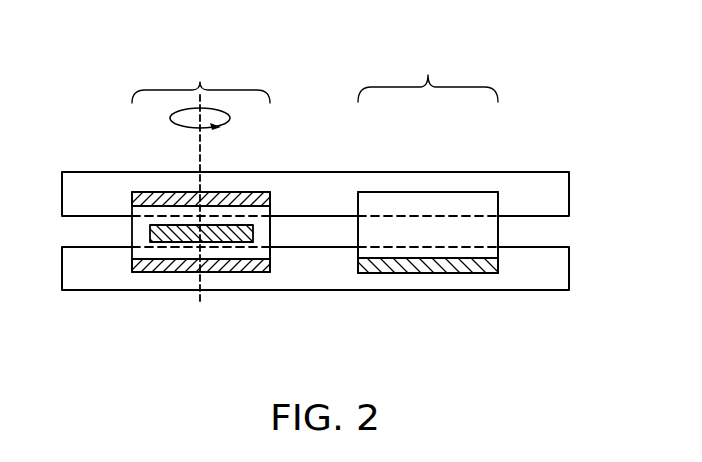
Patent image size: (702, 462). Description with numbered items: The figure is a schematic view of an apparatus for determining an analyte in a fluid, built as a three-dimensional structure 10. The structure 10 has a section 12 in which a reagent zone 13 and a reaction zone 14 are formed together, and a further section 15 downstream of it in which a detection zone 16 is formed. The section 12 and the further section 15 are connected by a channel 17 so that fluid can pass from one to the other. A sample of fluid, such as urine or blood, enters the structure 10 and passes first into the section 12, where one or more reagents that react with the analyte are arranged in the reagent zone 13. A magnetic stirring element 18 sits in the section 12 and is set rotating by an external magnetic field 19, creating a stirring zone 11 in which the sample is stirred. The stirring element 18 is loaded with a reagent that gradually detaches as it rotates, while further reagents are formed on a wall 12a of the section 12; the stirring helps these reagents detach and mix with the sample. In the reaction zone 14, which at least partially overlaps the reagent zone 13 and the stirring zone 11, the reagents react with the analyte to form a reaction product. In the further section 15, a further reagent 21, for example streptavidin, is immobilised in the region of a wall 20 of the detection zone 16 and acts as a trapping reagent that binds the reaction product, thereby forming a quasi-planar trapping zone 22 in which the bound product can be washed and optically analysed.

The three-dimensional structure 10 is at (563, 212).
The stirring zone 11 is at (155, 212).
The section 12 is at (201, 158).
The wall 12a is at (225, 272).
The reagent zone 13 is at (157, 272).
The reaction zone 14 is at (258, 272).
The further section 15 is at (428, 158).
The detection zone 16 is at (482, 230).
The channel 17 is at (330, 242).
The stirring element 18 is at (155, 231).
The external magnetic field 19 is at (229, 119).
The wall 20 is at (415, 272).
The further reagent 21 is at (472, 262).
The trapping zone 22 is at (497, 262).